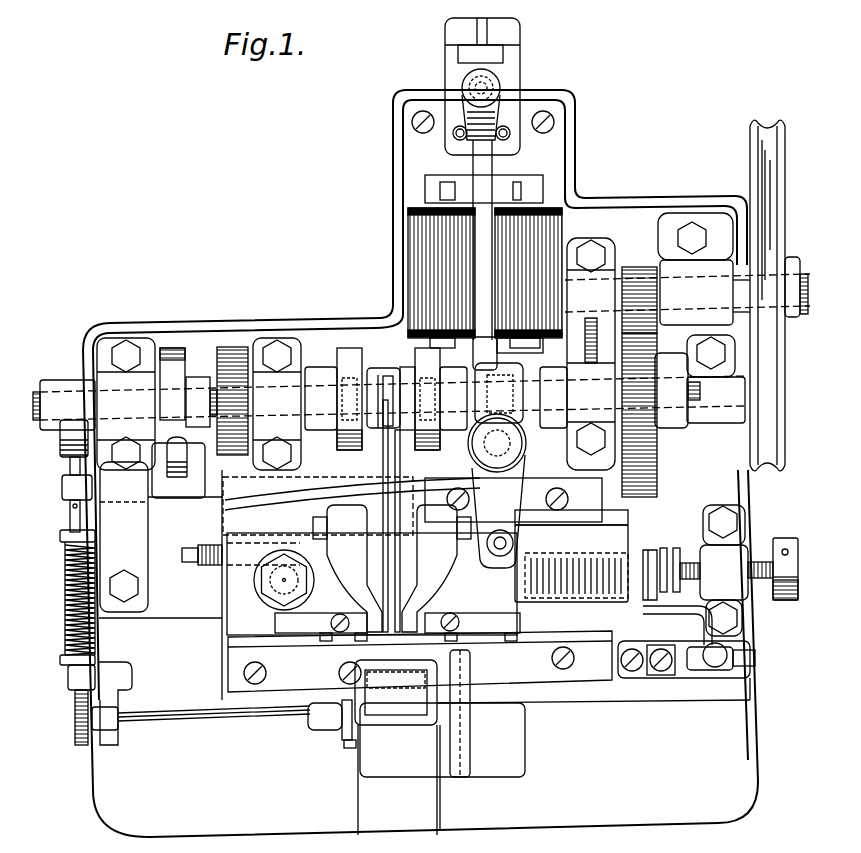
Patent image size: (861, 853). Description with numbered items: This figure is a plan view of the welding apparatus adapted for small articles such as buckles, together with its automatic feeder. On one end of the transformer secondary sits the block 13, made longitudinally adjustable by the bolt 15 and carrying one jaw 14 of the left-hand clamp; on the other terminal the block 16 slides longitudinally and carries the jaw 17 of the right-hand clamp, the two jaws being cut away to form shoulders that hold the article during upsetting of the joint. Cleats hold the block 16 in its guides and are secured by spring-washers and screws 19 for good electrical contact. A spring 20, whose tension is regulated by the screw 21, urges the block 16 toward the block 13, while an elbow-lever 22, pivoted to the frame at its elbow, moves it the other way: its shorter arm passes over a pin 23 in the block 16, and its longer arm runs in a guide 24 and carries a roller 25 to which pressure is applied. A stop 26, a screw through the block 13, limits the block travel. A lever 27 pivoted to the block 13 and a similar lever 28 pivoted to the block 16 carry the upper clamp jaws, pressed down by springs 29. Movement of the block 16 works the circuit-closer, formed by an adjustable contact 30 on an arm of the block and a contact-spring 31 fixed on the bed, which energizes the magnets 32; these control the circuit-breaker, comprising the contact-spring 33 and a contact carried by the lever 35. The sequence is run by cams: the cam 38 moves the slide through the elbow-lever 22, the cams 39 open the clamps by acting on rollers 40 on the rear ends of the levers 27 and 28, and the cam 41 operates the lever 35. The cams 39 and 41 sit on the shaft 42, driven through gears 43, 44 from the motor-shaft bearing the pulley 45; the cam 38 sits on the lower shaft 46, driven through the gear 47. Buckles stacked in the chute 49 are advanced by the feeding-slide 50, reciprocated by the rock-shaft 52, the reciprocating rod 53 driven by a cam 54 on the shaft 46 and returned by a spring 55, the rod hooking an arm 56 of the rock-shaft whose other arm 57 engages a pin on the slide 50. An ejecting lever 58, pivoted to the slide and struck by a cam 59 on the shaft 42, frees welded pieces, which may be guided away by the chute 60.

The block 13 is at (372, 584).
The jaw of the left-hand clamp 14 is at (318, 626).
The bolt 15 is at (270, 582).
The block 16 is at (571, 556).
The jaw of the right-hand clamp 17 is at (467, 620).
The spring-washers and screws 19 is at (533, 490).
The spring 20 is at (655, 560).
The screw 21 is at (762, 560).
The elbow-lever 22 is at (302, 492).
The pin 23 is at (499, 552).
The guide 24 is at (148, 528).
The roller 25 is at (177, 455).
The stop 26 is at (217, 566).
The lever 27 is at (372, 484).
The lever 28 is at (480, 447).
The springs 29 is at (392, 568).
The adjustable contact 30 is at (757, 655).
The contact-spring 31 is at (677, 678).
The magnets 32 is at (425, 240).
The contact-spring 33 is at (490, 100).
The lever 35 is at (485, 300).
The cam 38 is at (165, 348).
The cams 39 is at (352, 358).
The rollers 40 is at (350, 398).
The cam 41 is at (487, 353).
The shaft 42 is at (692, 397).
The gear 43 is at (658, 465).
The gear 44 is at (633, 267).
The motor wheel or pulley 45 is at (752, 160).
The shaft 46 is at (38, 380).
The gear 47 is at (225, 348).
The chute 49 is at (408, 723).
The feeding-slide 50 is at (408, 767).
The rock-shaft 52 is at (248, 718).
The reciprocating rod 53 is at (72, 513).
The cam 54 is at (66, 444).
The spring 55 is at (65, 580).
The arm 56 is at (74, 730).
The arm 57 is at (342, 735).
The lever 58 is at (393, 572).
The cam 59 is at (369, 380).
The chute 60 is at (368, 812).